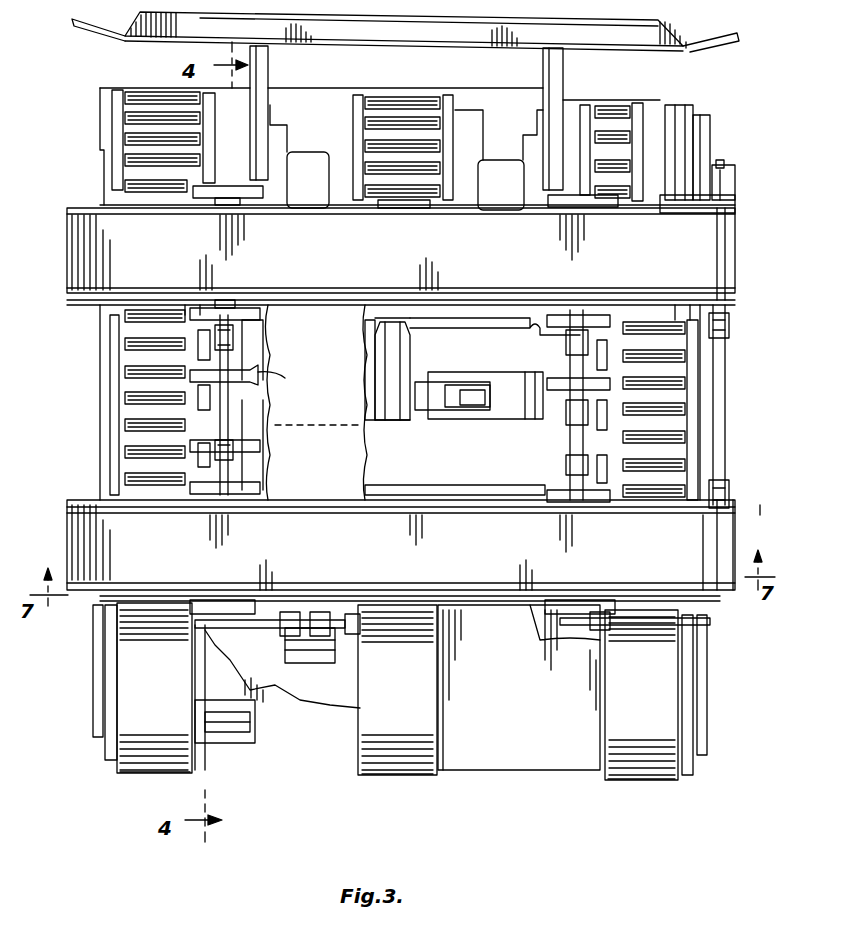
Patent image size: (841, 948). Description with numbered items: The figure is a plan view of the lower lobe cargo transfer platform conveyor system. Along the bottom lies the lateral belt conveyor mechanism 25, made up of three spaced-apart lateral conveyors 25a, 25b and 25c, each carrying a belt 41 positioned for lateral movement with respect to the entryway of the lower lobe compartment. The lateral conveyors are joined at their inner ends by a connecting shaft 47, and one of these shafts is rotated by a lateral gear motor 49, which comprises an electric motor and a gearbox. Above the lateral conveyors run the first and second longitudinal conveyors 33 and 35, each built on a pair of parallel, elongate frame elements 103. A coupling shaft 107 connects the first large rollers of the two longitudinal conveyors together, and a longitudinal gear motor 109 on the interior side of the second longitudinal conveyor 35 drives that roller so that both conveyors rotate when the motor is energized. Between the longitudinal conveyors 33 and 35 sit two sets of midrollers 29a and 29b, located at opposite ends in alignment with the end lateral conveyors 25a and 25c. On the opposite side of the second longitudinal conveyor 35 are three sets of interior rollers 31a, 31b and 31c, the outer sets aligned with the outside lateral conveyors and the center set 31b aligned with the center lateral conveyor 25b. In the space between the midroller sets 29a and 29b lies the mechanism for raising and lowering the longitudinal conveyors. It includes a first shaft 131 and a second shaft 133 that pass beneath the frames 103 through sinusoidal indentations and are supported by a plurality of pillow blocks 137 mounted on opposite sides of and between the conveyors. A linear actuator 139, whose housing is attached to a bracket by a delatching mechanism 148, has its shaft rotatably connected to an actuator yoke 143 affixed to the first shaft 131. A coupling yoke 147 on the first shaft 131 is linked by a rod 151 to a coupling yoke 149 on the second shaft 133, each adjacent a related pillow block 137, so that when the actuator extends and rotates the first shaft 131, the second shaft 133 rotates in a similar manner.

The lateral belt conveyor mechanism 25 is at (548, 795).
The lateral conveyor 25a is at (165, 706).
The center lateral conveyor 25b is at (408, 706).
The lateral conveyor 25c is at (656, 706).
The set of midrollers 29a is at (118, 350).
The set of midrollers 29b is at (690, 385).
The set of interior rollers 31a is at (142, 90).
The set of interior rollers 31b is at (392, 100).
The set of interior rollers 31c is at (612, 105).
The first longitudinal conveyor 33 is at (502, 562).
The second longitudinal conveyor 35 is at (472, 274).
The belt 41 is at (140, 765).
The connecting shaft 47 is at (265, 615).
The lateral gear motor 49 is at (350, 614).
The frame element 103 is at (733, 206).
The coupling shaft 107 is at (727, 416).
The longitudinal gear motor 109 is at (698, 138).
The first shaft 131 is at (190, 300).
The second shaft 133 is at (605, 330).
The pillow block 137 is at (245, 315).
The linear actuator 139 is at (395, 325).
The actuator yoke 143 is at (135, 375).
The coupling yoke 147 is at (215, 420).
The delatching mechanism 148 is at (470, 368).
The coupling yoke 149 is at (625, 422).
The rod 151 is at (405, 428).